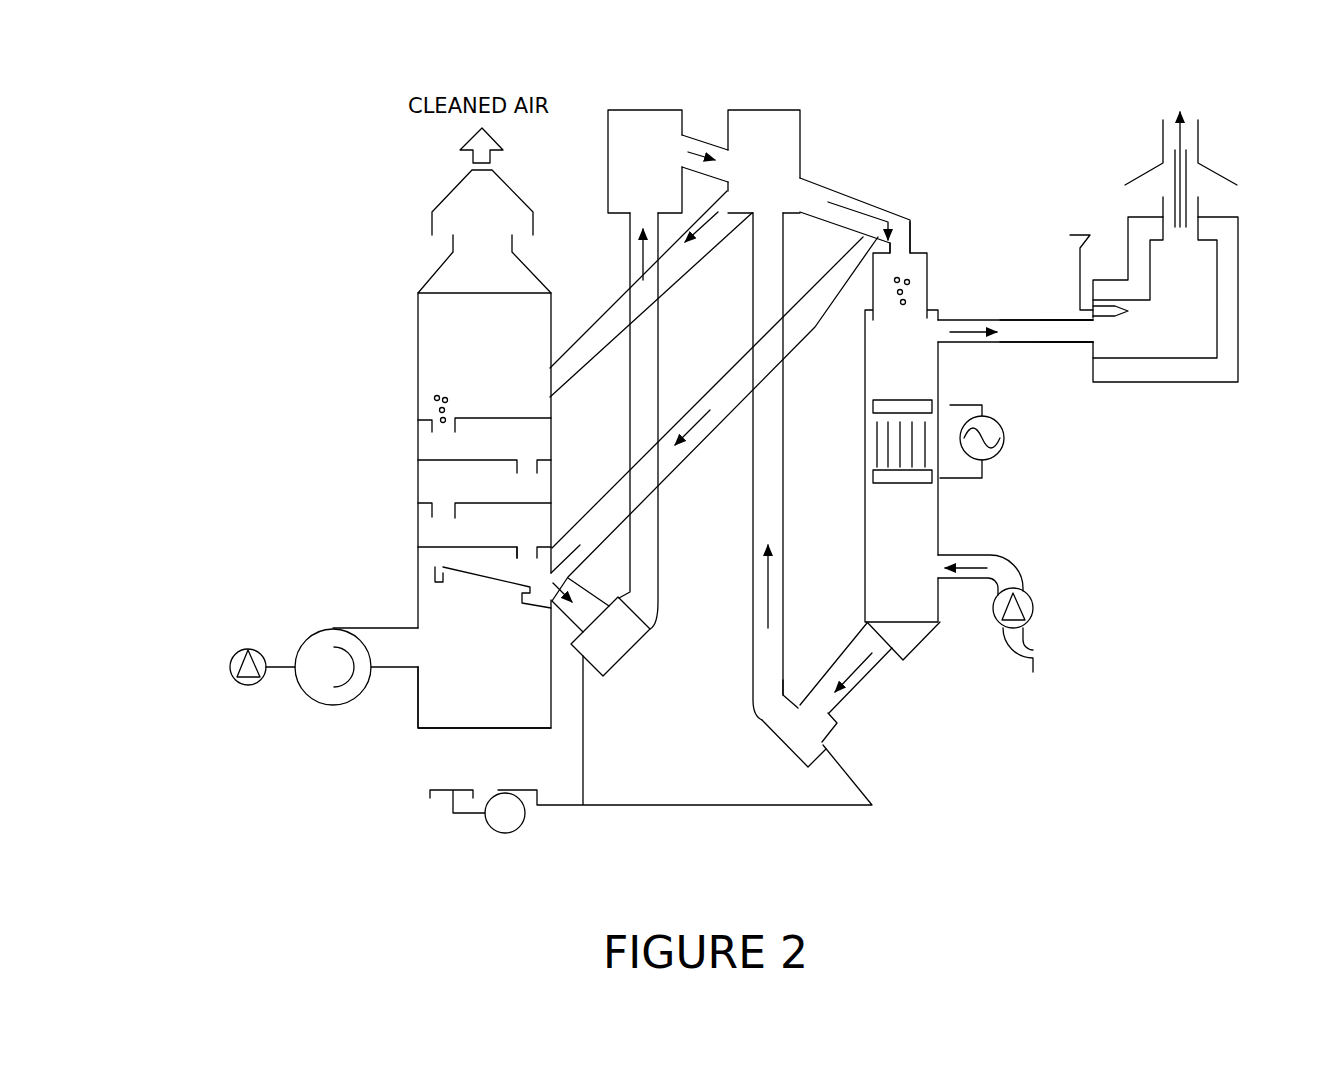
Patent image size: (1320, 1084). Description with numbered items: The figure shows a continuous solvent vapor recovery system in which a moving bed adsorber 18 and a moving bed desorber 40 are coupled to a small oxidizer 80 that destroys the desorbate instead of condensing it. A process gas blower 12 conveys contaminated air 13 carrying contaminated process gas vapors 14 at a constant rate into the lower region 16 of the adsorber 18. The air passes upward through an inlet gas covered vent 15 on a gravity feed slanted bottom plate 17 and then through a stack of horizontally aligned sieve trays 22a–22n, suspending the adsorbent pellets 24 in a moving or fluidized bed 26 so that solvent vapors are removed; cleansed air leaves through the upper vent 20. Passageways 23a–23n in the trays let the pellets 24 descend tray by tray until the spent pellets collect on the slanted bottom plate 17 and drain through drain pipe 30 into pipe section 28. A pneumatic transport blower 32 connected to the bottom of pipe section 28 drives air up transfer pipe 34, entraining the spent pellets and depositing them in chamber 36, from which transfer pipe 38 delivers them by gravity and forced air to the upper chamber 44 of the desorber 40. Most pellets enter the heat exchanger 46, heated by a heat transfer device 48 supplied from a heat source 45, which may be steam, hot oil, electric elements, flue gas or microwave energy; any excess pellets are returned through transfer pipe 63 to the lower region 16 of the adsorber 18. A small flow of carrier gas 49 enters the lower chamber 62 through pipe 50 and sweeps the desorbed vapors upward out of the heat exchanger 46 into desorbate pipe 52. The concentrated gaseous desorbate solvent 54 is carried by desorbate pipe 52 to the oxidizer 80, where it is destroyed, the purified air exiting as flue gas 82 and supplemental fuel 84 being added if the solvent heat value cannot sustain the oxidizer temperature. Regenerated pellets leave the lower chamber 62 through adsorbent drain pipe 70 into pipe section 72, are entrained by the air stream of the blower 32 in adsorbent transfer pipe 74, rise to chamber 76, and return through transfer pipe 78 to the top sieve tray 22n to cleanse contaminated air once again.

The process gas blower 12 is at (292, 692).
The contaminated air 13 is at (382, 645).
The contaminated process gas vapors 14 is at (443, 628).
The inlet gas covered vent 15 is at (505, 583).
The lower region 16 is at (418, 703).
The gravity feed slanted bottom plate 17 is at (436, 584).
The moving bed adsorber 18 is at (407, 513).
The upper vent 20 is at (445, 232).
The sieve tray 22a is at (422, 545).
The sieve tray 22n is at (527, 418).
The passageway 23a is at (527, 550).
The passageway 23n is at (430, 425).
The adsorbent pellets 24 is at (427, 393).
The moving or fluidized bed 26 is at (487, 503).
The pipe section 28 is at (627, 655).
The drain pipe 30 is at (551, 660).
The pneumatic transport blower 32 is at (540, 828).
The transfer pipe 34 is at (660, 545).
The chamber 36 is at (608, 175).
The transfer pipe 38 is at (695, 132).
The moving bed desorber 40 is at (950, 241).
The upper chamber 44 is at (928, 255).
The heat source 45 is at (992, 460).
The heat exchanger 46 is at (938, 312).
The heat transfer device 48 is at (860, 428).
The carrier gas 49 is at (1033, 667).
The pipe 50 is at (992, 572).
The desorbate pipe 52 is at (993, 343).
The concentrated gaseous desorbate solvent 54 is at (1047, 327).
The lower chamber 62 is at (865, 565).
The transfer pipe 63 is at (740, 362).
The adsorbent drain pipe 70 is at (867, 680).
The pipe section 72 is at (778, 737).
The adsorbent transfer pipe 74 is at (785, 490).
The chamber 76 is at (802, 138).
The transfer pipe 78 is at (608, 310).
The oxidizer 80 is at (1215, 382).
The flue gas 82 is at (1183, 150).
The supplemental fuel 84 is at (1080, 270).